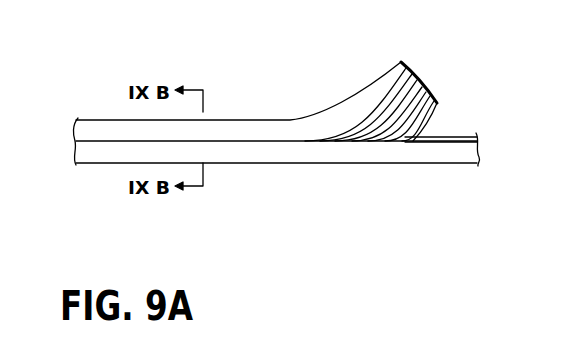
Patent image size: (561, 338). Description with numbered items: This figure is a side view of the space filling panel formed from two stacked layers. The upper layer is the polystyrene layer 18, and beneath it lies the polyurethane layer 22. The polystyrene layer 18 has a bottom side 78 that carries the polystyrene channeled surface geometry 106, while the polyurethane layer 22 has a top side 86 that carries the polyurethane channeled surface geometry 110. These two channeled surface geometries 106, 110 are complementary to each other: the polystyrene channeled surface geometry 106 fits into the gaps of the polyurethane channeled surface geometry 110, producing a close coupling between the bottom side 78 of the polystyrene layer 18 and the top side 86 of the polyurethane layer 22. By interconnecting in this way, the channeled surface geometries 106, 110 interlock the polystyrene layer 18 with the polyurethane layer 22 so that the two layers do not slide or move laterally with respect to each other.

The polystyrene layer 18 is at (253, 126).
The polyurethane layer 22 is at (262, 153).
The bottom side 78 is at (373, 116).
The top side 86 is at (399, 140).
The polystyrene channeled surface geometry 106 is at (408, 101).
The polyurethane channeled surface geometry 110 is at (438, 136).